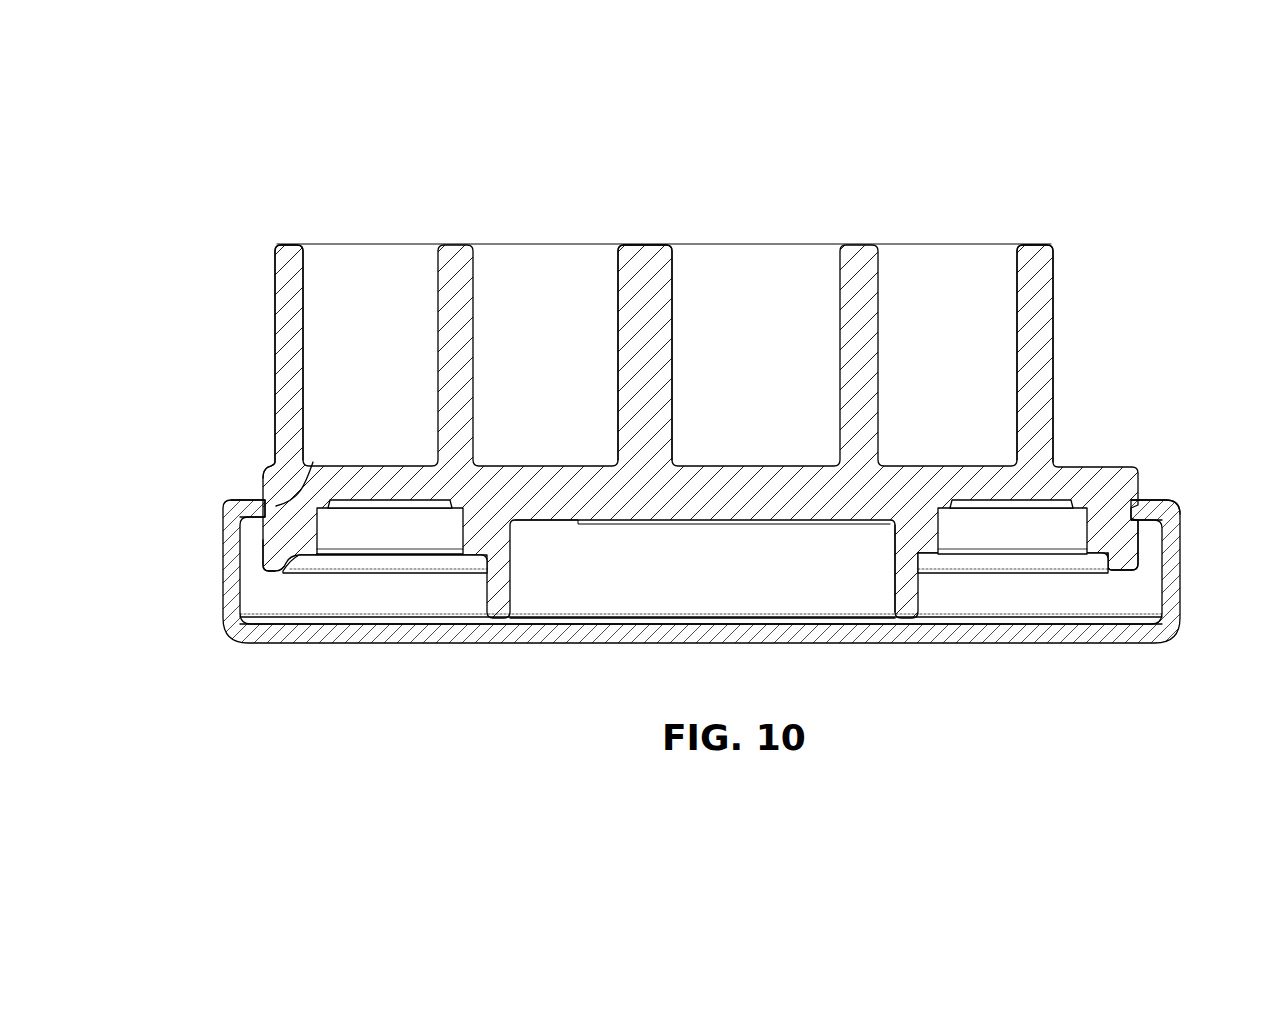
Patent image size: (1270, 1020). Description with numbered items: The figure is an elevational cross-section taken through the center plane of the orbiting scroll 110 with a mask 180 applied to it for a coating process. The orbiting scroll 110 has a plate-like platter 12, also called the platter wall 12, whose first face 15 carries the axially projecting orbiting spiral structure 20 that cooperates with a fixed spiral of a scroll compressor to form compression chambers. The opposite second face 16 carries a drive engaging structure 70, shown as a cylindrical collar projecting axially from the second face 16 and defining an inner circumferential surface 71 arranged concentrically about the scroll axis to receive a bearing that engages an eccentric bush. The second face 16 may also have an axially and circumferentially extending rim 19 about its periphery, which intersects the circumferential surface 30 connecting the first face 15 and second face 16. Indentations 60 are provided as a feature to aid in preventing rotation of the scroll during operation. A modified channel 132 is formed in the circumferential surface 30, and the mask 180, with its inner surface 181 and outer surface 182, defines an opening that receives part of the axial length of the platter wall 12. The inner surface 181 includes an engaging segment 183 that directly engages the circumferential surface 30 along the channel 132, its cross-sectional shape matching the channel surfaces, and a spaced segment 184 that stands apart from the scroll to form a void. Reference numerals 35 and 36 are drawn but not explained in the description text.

The orbiting scroll 110 is at (300, 212).
The platter 12 is at (1100, 477).
The first face 15 is at (1067, 464).
The second face 16 is at (1120, 573).
The rim 19 is at (280, 573).
The orbiting spiral structure 20 is at (643, 246).
The circumferential surface 30 is at (1140, 556).
The outer wall 35 is at (263, 475).
The lower corner 36 is at (258, 560).
The indentations 60 is at (402, 525).
The drive engaging structure 70 is at (497, 603).
The inner circumferential surface 71 is at (848, 592).
The channel 132 is at (243, 499).
The mask 180 is at (557, 635).
The inner surface 181 is at (1040, 622).
The outer surface 182 is at (1180, 581).
The engaging segment 183 is at (290, 503).
The spaced segment 184 is at (970, 622).